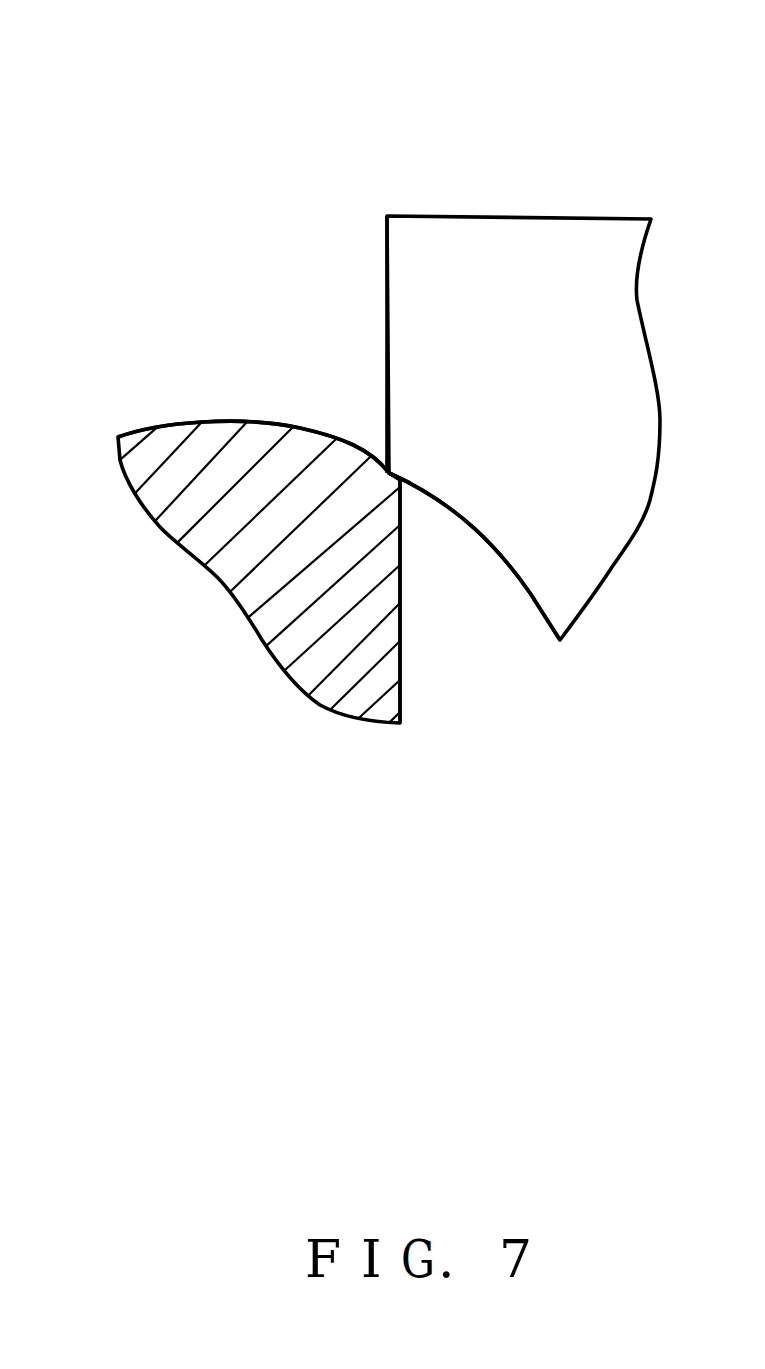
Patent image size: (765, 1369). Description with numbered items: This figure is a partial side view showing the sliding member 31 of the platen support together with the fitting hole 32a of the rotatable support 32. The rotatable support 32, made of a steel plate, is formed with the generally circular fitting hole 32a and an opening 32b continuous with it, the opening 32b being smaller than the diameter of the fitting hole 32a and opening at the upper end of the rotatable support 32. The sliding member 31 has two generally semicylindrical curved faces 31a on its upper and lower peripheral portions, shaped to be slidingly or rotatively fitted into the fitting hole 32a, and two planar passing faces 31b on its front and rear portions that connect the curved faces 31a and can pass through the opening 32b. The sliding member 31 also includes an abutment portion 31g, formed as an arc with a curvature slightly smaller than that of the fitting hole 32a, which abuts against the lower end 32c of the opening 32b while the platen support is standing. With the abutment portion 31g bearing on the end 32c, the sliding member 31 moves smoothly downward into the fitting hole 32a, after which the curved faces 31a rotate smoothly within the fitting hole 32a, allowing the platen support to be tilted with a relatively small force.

The sliding member 31 is at (318, 673).
The curved face 31a is at (158, 427).
The abutment portion 31g is at (386, 467).
The passing face 31b is at (400, 673).
The rotatable support 32 is at (555, 245).
The fitting hole 32a is at (507, 563).
The opening 32b is at (385, 247).
The lower end of the opening 32c is at (389, 474).